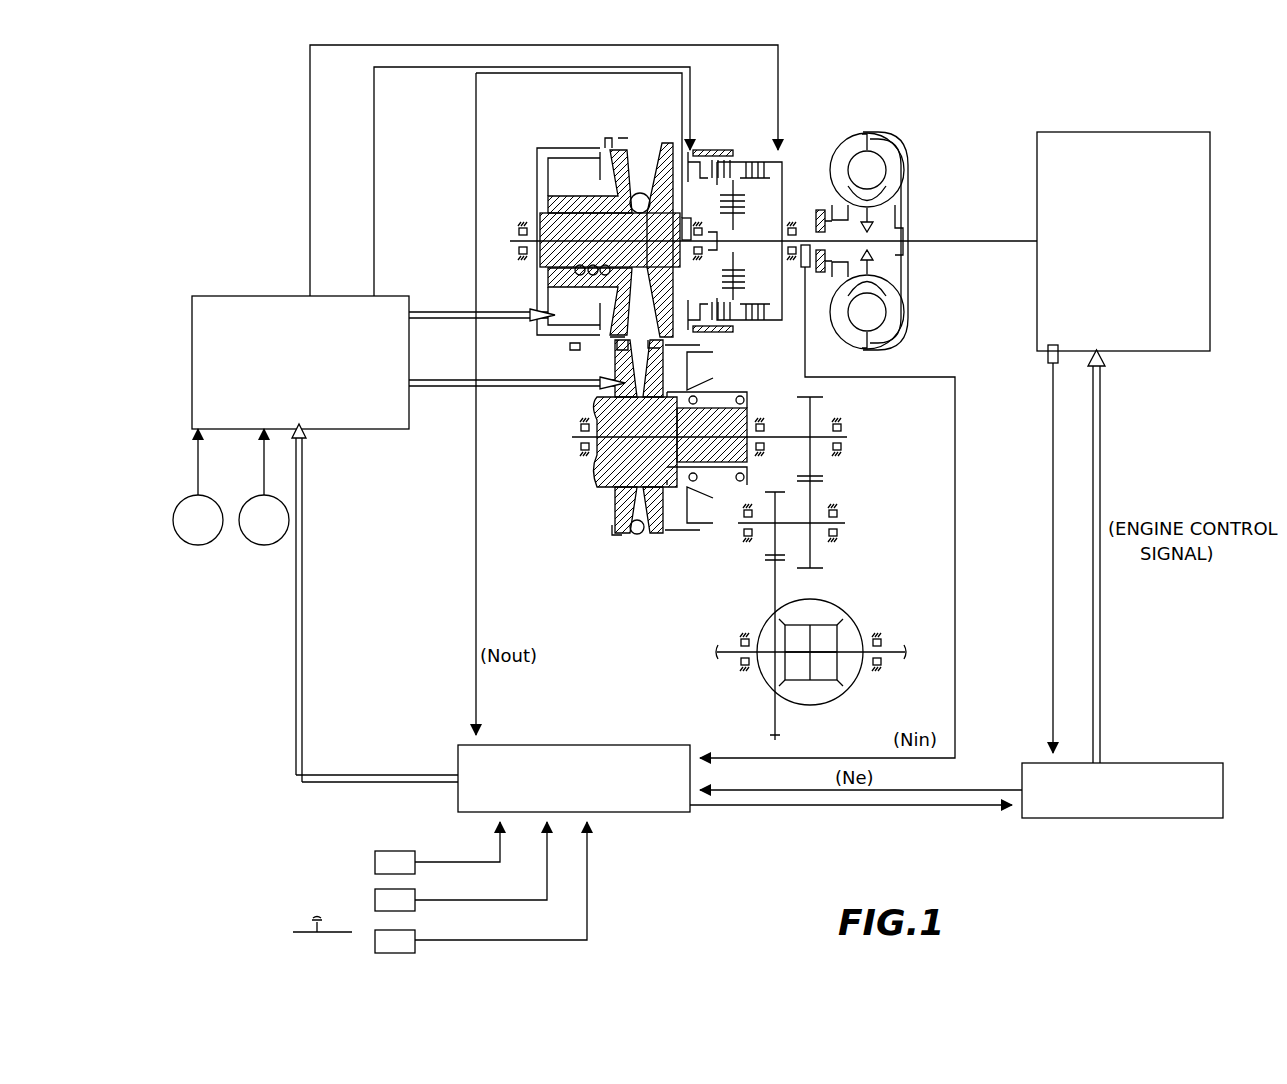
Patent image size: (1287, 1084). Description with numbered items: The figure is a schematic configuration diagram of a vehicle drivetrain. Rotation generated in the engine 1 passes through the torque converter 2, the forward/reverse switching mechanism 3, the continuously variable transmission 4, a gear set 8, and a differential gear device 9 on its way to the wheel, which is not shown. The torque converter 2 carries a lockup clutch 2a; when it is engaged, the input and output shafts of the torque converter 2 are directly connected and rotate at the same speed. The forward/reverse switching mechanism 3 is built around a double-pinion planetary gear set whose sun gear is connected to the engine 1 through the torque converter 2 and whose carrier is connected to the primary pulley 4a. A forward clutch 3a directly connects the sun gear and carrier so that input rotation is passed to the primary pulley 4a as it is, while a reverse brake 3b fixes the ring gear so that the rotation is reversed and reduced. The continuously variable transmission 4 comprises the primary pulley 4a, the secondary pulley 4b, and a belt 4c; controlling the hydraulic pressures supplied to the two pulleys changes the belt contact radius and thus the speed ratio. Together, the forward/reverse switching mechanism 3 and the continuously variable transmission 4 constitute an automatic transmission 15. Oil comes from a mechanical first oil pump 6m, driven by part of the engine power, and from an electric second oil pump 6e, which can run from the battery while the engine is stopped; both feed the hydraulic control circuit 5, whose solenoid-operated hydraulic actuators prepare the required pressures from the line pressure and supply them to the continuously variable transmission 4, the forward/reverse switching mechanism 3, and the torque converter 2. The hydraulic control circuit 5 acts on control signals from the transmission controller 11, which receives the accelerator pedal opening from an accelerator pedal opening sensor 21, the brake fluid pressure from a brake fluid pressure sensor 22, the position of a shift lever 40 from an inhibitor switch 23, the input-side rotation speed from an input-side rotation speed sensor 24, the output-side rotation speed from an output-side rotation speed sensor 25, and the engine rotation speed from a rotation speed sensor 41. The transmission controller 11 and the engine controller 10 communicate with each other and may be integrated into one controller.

The engine 1 is at (1128, 132).
The torque converter 2 is at (891, 196).
The lockup clutch 2a is at (908, 215).
The forward/reverse switching mechanism 3 is at (735, 191).
The forward clutch 3a is at (760, 162).
The reverse brake 3b is at (730, 157).
The continuously variable transmission 4 is at (580, 215).
The primary pulley 4a is at (553, 150).
The secondary pulley 4b is at (703, 535).
The belt 4c is at (640, 193).
The automatic transmission 15 is at (622, 131).
The hydraulic control circuit 5 is at (236, 296).
The first oil pump 6m is at (198, 545).
The second oil pump 6e is at (264, 545).
The gear set 8 is at (857, 470).
The differential gear device 9 is at (855, 608).
The engine controller 10 is at (1168, 763).
The transmission controller 11 is at (458, 762).
The accelerator pedal opening sensor 21 is at (375, 862).
The brake fluid pressure sensor 22 is at (375, 900).
The inhibitor switch 23 is at (415, 948).
The input-side rotation speed sensor 24 is at (805, 245).
The output-side rotation speed sensor 25 is at (700, 200).
The shift lever 40 is at (312, 920).
The rotation speed sensor 41 is at (1048, 357).